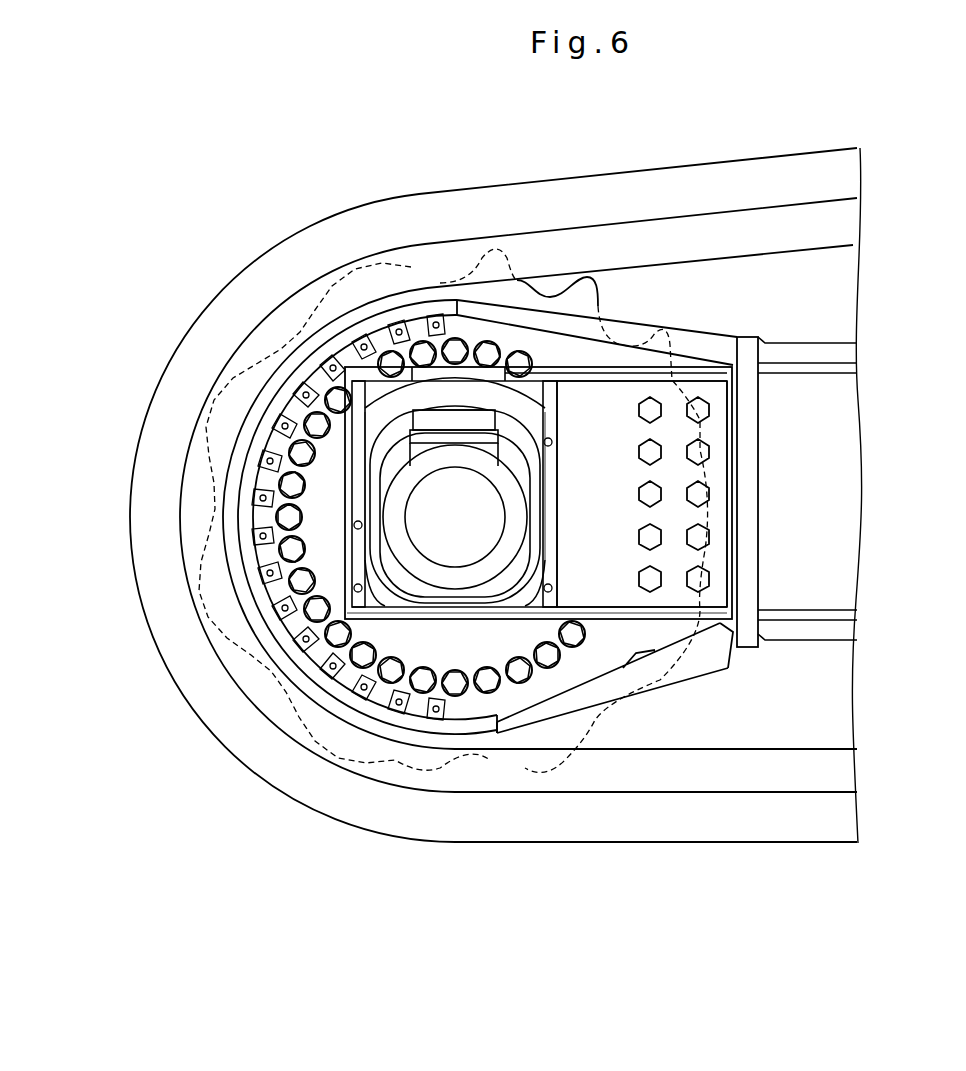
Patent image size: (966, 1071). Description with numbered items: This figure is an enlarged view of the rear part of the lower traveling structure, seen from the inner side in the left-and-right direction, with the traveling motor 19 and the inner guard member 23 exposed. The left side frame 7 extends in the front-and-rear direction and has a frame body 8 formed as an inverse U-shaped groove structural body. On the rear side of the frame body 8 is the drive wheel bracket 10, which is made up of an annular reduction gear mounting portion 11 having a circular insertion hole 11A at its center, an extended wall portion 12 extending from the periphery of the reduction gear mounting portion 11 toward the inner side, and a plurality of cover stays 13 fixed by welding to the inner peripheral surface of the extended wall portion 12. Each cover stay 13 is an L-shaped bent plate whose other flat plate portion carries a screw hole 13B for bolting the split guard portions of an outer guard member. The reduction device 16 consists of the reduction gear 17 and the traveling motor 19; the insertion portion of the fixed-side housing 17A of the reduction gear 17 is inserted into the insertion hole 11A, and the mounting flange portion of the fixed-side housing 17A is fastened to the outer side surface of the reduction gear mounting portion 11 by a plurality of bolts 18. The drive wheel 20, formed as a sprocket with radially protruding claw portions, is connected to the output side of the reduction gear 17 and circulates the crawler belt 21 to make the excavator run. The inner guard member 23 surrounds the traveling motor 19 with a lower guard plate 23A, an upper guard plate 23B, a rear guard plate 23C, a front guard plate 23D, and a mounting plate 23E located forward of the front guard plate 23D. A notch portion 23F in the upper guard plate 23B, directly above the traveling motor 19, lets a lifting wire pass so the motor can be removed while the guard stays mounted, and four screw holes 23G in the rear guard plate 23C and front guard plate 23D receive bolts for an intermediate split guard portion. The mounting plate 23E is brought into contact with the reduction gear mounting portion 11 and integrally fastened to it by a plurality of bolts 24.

The left side frame 7 is at (850, 420).
The frame body 8 is at (850, 470).
The drive wheel bracket 10 is at (698, 328).
The reduction gear mounting portion 11 is at (572, 350).
The insertion hole 11A is at (311, 518).
The extended wall portion 12 is at (257, 447).
The cover stay 13 is at (433, 326).
The screw hole 13B is at (432, 322).
The reduction device 16 is at (338, 459).
The reduction gear 17 is at (328, 502).
The fixed-side housing 17A is at (352, 608).
The bolt 18 is at (488, 350).
The traveling motor 19 is at (460, 517).
The drive wheel 20 is at (585, 733).
The crawler belt 21 is at (731, 182).
The inner guard member 23 is at (602, 372).
The lower guard plate 23A is at (424, 612).
The upper guard plate 23B is at (517, 370).
The rear guard plate 23C is at (300, 478).
The front guard plate 23D is at (556, 490).
The mounting plate 23E is at (617, 402).
The notch portion 23F is at (468, 372).
The screw hole 23G is at (353, 527).
The bolt 24 is at (652, 452).